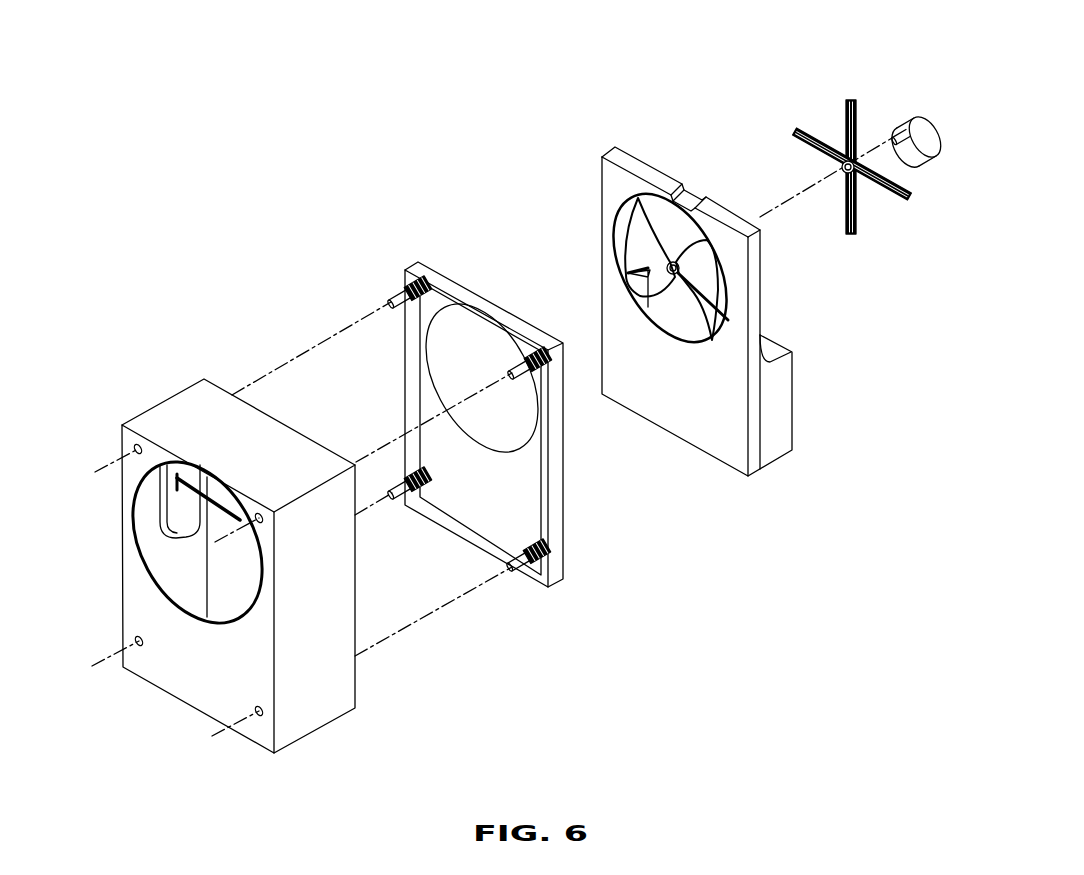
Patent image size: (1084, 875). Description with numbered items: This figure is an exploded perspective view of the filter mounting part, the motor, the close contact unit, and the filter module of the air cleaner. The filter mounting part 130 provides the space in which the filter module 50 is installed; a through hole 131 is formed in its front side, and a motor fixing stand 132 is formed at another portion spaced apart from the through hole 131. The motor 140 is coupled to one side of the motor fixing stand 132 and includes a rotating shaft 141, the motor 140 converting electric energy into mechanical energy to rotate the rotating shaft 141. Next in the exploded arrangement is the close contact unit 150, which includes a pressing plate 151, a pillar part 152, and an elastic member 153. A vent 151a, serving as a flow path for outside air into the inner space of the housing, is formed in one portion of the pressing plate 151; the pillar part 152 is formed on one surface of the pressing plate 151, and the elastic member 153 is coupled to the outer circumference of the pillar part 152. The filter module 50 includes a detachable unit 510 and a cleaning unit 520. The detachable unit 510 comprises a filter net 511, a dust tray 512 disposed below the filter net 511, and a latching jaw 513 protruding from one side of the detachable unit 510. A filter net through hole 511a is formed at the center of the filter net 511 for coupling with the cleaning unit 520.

The filter module 50 is at (795, 42).
The detachable unit 510 is at (693, 258).
The cleaning unit 520 is at (817, 112).
The motor 140 is at (915, 115).
The rotating shaft 141 is at (901, 122).
The filter mounting part 130 is at (199, 545).
The through hole 131 is at (135, 449).
The motor fixing stand 132 is at (188, 498).
The close contact unit 150 is at (484, 417).
The pressing plate 151 is at (480, 499).
The vent 151a is at (455, 367).
The pillar part 152 is at (522, 572).
The elastic member 153 is at (550, 547).
The filter net 511 is at (670, 269).
The filter net through hole 511a is at (667, 273).
The dust tray 512 is at (773, 413).
The latching jaw 513 is at (722, 218).